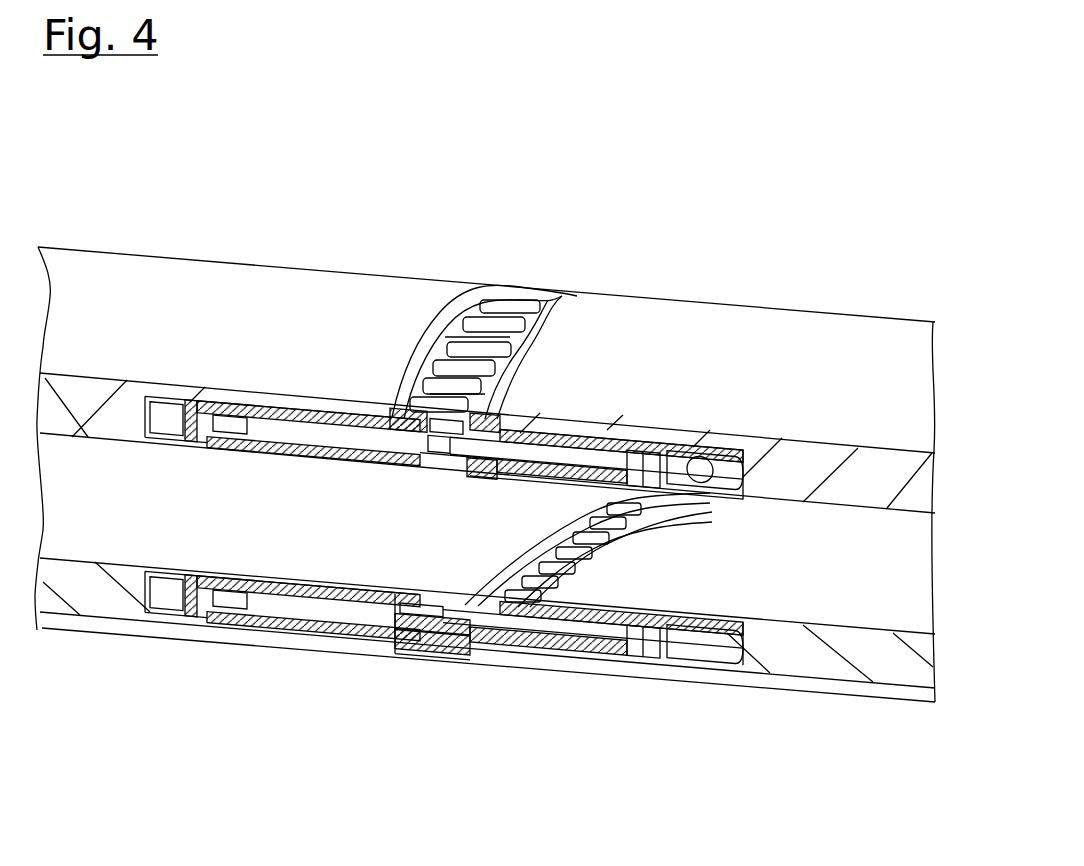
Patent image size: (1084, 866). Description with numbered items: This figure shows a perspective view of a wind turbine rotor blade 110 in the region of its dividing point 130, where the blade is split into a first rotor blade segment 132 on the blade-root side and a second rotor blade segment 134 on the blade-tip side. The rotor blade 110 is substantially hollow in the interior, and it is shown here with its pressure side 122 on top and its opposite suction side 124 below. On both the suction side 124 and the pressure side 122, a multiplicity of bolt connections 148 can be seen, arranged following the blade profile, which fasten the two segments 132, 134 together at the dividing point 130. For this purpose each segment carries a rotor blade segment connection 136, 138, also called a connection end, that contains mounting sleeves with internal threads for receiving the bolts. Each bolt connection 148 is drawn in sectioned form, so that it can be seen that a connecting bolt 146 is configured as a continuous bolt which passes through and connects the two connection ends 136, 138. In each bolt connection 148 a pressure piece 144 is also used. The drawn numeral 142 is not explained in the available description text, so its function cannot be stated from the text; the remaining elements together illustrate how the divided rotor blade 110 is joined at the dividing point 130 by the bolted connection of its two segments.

The rotor blade 110 is at (730, 208).
The pressure side 122 is at (163, 288).
The suction side 124 is at (107, 633).
The dividing point 130 is at (545, 233).
The first rotor blade segment 132 is at (265, 290).
The second rotor blade segment 134 is at (797, 337).
The rotor blade segment connection 136 is at (507, 667).
The rotor blade segment connection 138 is at (400, 667).
The bushing 142 is at (613, 657).
The pressure piece 144 is at (468, 292).
The connecting bolt 146 is at (293, 600).
The bolt connection 148 is at (457, 665).